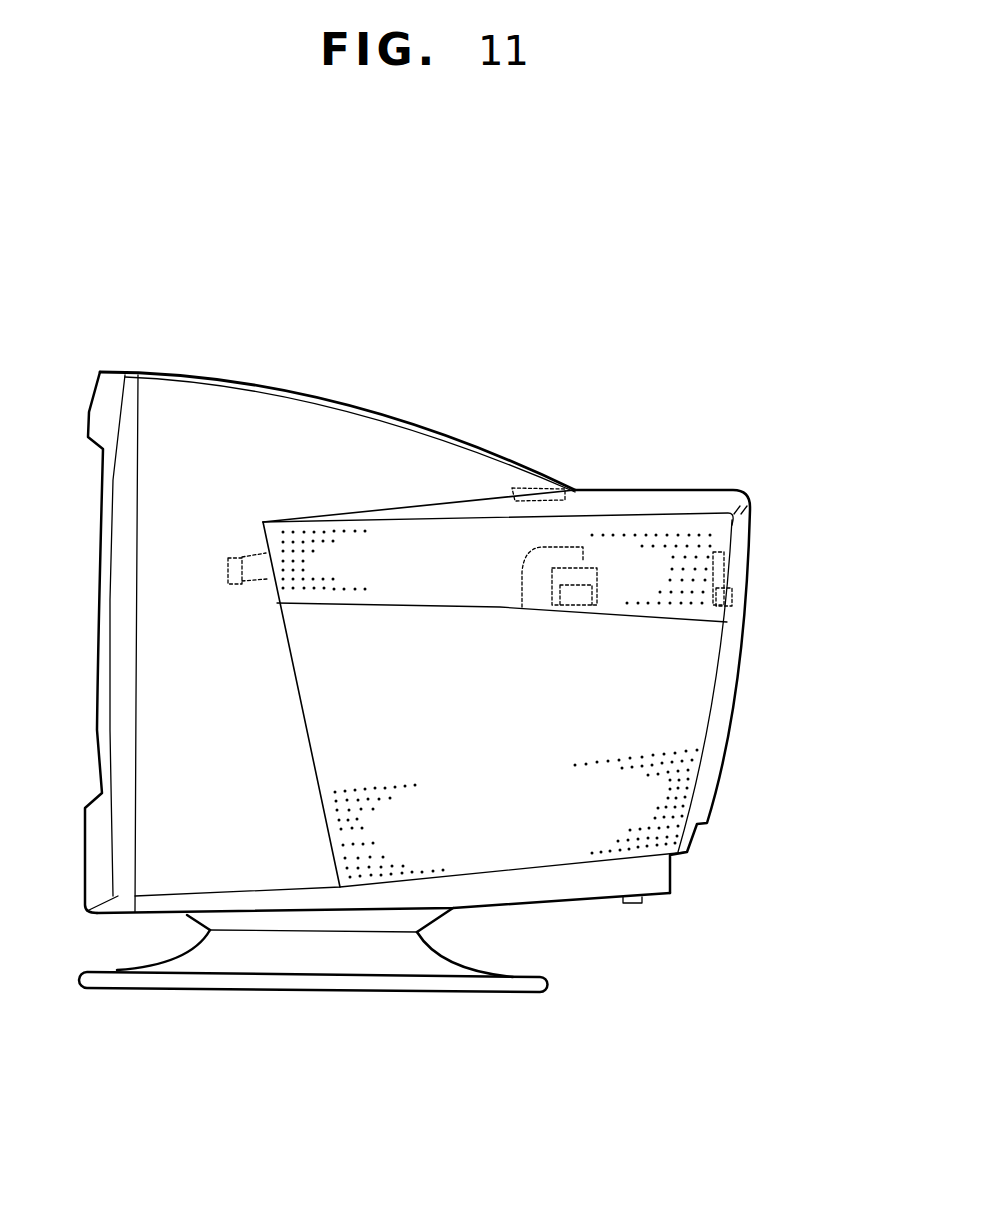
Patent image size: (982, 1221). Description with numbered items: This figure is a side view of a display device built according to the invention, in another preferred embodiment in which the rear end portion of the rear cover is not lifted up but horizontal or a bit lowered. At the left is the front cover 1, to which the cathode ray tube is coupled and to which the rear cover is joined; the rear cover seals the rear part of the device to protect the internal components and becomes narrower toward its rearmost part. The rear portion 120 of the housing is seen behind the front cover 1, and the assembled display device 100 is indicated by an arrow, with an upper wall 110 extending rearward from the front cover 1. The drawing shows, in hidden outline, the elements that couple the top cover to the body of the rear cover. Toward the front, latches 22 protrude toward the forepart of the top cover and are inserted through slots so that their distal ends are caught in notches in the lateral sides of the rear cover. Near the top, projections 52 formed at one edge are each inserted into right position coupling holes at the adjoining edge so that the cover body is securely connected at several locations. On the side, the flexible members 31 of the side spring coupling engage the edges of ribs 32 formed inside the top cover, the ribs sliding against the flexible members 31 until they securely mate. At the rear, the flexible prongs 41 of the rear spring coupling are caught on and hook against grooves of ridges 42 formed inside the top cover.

The front cover 1 is at (128, 403).
The latches 22 is at (230, 557).
The cabinet top wall 110 is at (405, 447).
The projections 52 is at (513, 493).
The ribs 32 is at (575, 597).
The flexible members 31 is at (557, 575).
The back cover 120 is at (728, 498).
The ridges 42 is at (735, 572).
The flexible prongs 41 is at (730, 593).
The display apparatus housing 100 is at (748, 702).